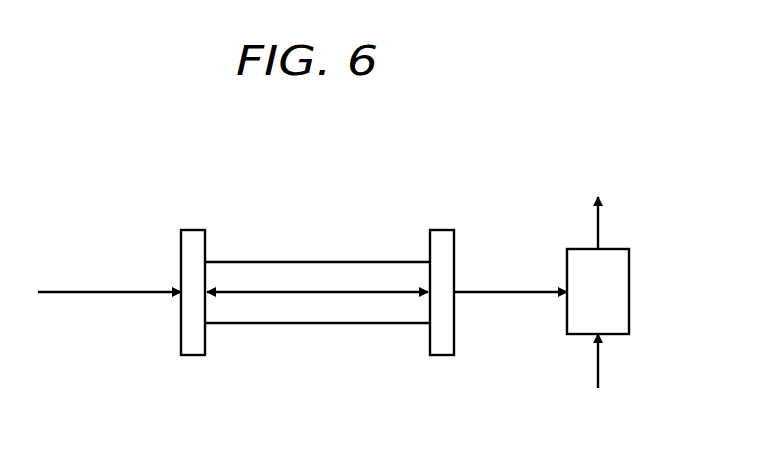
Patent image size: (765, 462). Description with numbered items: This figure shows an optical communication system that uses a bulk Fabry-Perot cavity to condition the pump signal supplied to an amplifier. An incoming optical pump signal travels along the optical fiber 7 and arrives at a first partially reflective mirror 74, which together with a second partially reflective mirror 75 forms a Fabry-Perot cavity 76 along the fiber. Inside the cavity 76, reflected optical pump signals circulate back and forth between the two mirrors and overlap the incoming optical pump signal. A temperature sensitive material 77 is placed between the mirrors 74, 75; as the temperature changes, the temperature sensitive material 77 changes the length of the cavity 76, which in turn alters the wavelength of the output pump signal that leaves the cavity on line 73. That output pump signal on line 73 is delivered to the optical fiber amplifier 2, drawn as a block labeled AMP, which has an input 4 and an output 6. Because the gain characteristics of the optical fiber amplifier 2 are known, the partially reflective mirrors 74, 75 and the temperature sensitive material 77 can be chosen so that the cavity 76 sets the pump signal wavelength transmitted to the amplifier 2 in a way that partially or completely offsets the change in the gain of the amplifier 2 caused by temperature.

The optical fiber 7 is at (117, 290).
The partially reflective mirror 74 is at (193, 356).
The partially reflective mirror 75 is at (442, 356).
The Fabry-Perot cavity 76 is at (318, 251).
The temperature sensitive material 77 is at (316, 316).
The line 73 is at (511, 289).
The optical fiber amplifier 2 is at (630, 293).
The amplified output signal 6 is at (598, 226).
The pump/control input to amplifier 4 is at (598, 370).